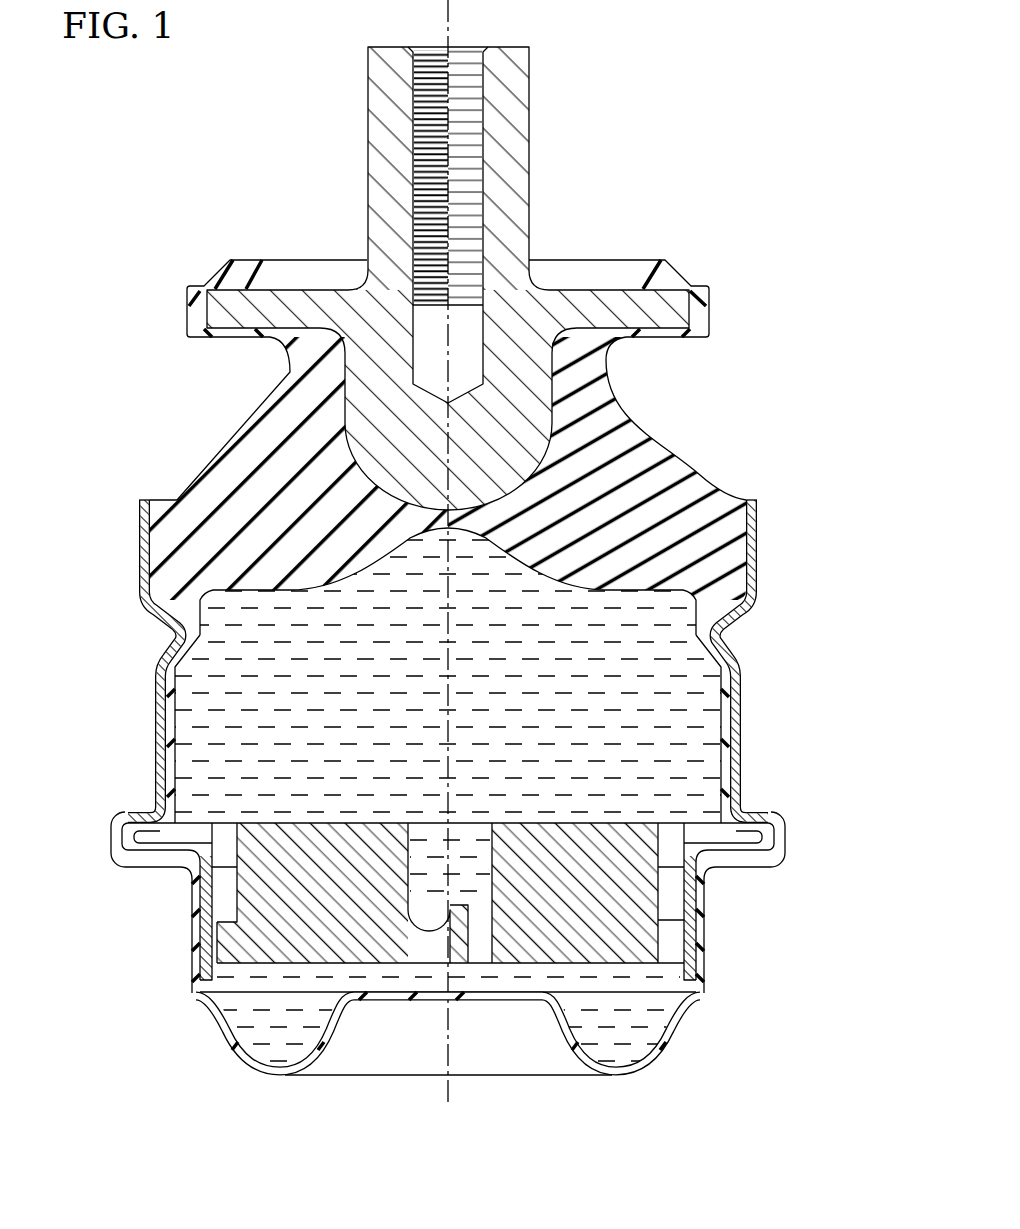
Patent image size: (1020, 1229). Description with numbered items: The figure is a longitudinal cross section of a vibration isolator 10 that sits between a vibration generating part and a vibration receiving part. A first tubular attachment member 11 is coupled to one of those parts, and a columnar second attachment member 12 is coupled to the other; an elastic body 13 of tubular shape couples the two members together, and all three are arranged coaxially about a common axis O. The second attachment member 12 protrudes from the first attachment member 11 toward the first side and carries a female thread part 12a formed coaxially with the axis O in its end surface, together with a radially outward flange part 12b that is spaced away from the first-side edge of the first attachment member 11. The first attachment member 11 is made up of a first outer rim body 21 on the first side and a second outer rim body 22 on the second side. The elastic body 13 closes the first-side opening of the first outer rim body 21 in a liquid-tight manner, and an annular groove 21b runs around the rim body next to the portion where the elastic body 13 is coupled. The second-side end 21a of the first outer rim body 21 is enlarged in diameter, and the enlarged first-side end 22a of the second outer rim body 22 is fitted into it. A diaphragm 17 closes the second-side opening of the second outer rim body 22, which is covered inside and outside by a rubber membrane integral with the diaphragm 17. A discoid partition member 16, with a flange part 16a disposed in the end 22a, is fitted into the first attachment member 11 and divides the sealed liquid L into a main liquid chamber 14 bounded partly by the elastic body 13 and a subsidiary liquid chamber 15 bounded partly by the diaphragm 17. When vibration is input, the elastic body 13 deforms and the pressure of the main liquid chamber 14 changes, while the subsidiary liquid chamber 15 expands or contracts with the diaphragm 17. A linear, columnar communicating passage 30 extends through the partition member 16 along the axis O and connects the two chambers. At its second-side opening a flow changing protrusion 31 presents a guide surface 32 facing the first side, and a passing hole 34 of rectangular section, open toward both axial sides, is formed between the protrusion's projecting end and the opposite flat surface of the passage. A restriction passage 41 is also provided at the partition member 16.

The vibration isolator 10 is at (765, 92).
The first tubular attachment member 11 is at (798, 803).
The second attachment member 12 is at (540, 108).
The female thread part 12a is at (460, 62).
The flange part 12b is at (572, 290).
The elastic body 13 is at (675, 447).
The main liquid chamber 14 is at (665, 703).
The subsidiary liquid chamber 15 is at (645, 1012).
The partition member 16 is at (210, 951).
The flange part 16a is at (700, 830).
The diaphragm 17 is at (672, 1033).
The first outer rim body 21 is at (773, 548).
The end of the first outer rim body 21a is at (110, 835).
The annular groove 21b is at (720, 622).
The second outer rim body 22 is at (720, 897).
The end of the second outer rim body 22a is at (788, 838).
The communicating passage 30 is at (431, 818).
The flow changing protrusion 31 is at (434, 978).
The guide surface 32 is at (428, 912).
The passing hole 34 is at (489, 946).
The restriction passage 41 is at (215, 898).
The liquid L is at (235, 650).
The axis O is at (440, 20).